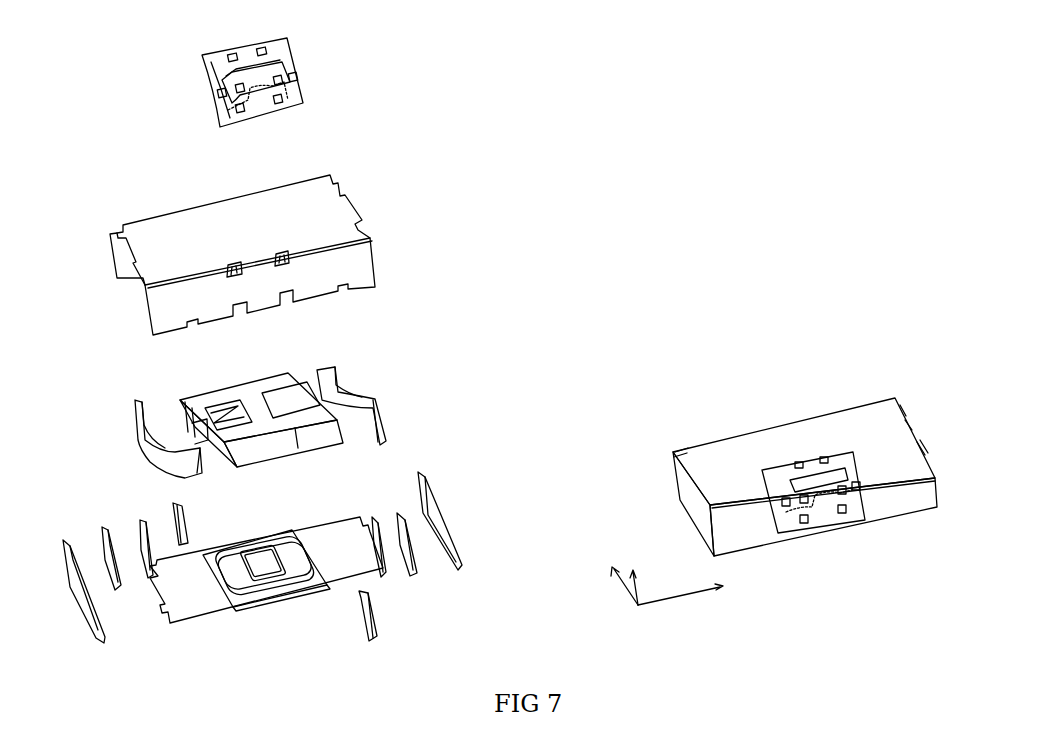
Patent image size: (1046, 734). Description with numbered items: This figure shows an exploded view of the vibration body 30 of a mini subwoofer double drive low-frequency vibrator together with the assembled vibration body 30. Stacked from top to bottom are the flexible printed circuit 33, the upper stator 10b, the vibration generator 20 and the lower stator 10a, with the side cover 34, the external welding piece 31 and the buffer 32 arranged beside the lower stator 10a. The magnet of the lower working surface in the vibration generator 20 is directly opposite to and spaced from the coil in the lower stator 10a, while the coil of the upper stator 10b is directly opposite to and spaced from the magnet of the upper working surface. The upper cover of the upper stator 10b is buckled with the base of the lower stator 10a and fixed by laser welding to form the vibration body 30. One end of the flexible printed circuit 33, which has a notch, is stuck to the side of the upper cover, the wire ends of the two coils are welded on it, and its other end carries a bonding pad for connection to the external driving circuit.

The flexible printed circuit 33 is at (305, 105).
The upper stator 10b is at (377, 258).
The vibration generator 20 is at (355, 385).
The lower stator 10a is at (348, 517).
The side cover 34 is at (443, 503).
The external welding piece 31 is at (413, 577).
The buffer 32 is at (378, 613).
The vibration body 30 is at (558, 627).